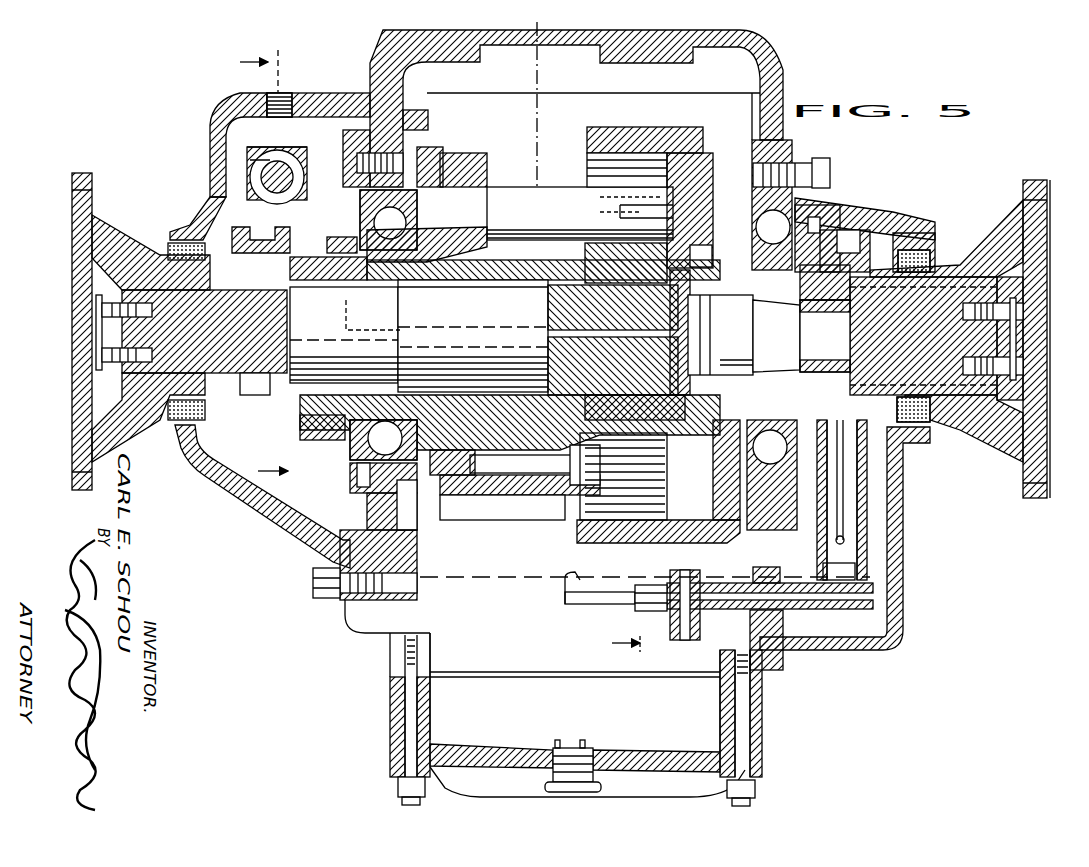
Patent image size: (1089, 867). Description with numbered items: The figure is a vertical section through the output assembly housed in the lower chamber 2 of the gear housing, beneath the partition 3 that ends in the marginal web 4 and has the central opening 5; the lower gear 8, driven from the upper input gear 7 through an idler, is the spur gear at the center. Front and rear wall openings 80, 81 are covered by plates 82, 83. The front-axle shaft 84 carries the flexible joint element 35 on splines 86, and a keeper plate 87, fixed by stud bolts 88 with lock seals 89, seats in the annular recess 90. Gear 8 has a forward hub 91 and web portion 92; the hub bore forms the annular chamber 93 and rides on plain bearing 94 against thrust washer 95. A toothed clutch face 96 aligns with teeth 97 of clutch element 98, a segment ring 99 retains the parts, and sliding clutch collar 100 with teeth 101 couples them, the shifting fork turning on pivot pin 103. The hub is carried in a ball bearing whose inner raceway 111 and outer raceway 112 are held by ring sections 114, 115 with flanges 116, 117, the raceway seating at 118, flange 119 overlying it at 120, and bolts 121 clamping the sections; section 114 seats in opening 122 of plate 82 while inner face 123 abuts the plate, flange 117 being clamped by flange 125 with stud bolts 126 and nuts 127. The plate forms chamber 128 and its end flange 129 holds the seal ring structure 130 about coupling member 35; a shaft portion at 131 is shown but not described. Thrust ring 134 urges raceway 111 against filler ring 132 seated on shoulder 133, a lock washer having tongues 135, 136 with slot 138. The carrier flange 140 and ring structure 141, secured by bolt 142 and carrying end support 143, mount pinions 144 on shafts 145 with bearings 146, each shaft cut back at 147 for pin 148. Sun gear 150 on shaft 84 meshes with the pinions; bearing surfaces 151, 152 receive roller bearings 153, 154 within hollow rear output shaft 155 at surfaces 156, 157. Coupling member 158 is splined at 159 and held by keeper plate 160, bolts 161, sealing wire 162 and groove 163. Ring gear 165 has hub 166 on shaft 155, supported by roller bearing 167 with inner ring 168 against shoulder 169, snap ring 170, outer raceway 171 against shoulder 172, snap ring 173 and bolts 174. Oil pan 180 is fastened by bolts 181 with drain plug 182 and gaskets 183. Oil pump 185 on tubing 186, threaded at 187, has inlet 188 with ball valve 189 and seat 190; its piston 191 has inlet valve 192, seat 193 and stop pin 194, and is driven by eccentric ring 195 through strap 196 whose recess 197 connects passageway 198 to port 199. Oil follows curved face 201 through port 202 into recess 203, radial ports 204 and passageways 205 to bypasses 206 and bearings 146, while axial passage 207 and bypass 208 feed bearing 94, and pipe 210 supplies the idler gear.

The lower chamber 2 is at (458, 625).
The partition 3 is at (531, 360).
The marginal web 4 is at (712, 85).
The central opening 5 is at (530, 60).
The upper input gear 7 is at (235, 270).
The lower gear 8 is at (510, 512).
The flexible joint element 35 is at (125, 250).
The opening 80 is at (412, 125).
The opening 81 is at (760, 177).
The plate 82 is at (212, 147).
The plate 83 is at (900, 612).
The shaft 84 is at (188, 358).
The meshing splines 86 is at (180, 296).
The plate 87 is at (105, 376).
The stud bolts 88 is at (105, 306).
The lock seals 89 is at (95, 329).
The annular recess 90 is at (120, 391).
The hub 91 is at (372, 275).
The intermediate web portion 92 is at (507, 435).
The annular chamber 93 is at (488, 282).
The plain bearing 94 is at (336, 366).
The thrust washer 95 is at (290, 252).
The toothed clutch face 96 is at (290, 240).
The teeth 97 is at (222, 432).
The clutch element 98 is at (236, 395).
The segment ring 99 is at (311, 300).
The sliding clutch collar 100 is at (288, 432).
The teeth 101 is at (265, 432).
The pivotal pin mounting 103 is at (272, 170).
The inner raceway 111 is at (346, 220).
The outer raceway 112 is at (416, 193).
The ring section 114 is at (360, 105).
The ring support section 115 is at (422, 152).
The inner marginal flange 116 is at (425, 202).
The outer marginal flange 117 is at (370, 128).
The seat 118 is at (360, 210).
The flange 119 is at (335, 482).
The overlying portion 120 is at (350, 500).
The bolts 121 is at (355, 190).
The opening 122 is at (350, 526).
The inner face 123 is at (384, 509).
The flange 125 is at (372, 80).
The stud bolts 126 is at (313, 583).
The nuts 127 is at (340, 562).
The chamber 128 is at (220, 214).
The end flange 129 is at (185, 447).
The bearing and seal ring structure 130 is at (175, 417).
The shaft portion 131 is at (300, 350).
The filler ring 132 is at (478, 263).
The annular shoulder 133 is at (500, 248).
The thrust ring 134 is at (385, 438).
The tongue 135 is at (380, 413).
The tongue 136 is at (328, 427).
The slot 138 is at (350, 465).
The flange 140 is at (556, 462).
The ring structure 141 is at (715, 426).
The bolt 142 is at (472, 463).
The pinion shaft end supporting structure 143 is at (688, 156).
The pinions 144 is at (650, 165).
The pinion shaft 145 is at (522, 220).
The bearing 146 is at (620, 203).
The cut back 147 is at (492, 232).
The pin 148 is at (490, 209).
The gear structure 150 is at (612, 417).
The bearing surface 151 is at (716, 348).
The bearing surface 152 is at (813, 331).
The roller bearing 153 is at (730, 382).
The roller bearing 154 is at (808, 366).
The rear output shaft 155 is at (893, 368).
The bearing surface 156 is at (800, 340).
The bearing surface 157 is at (765, 332).
The coupling member 158 is at (995, 436).
The splined connection 159 is at (948, 412).
The keeper plate 160 is at (1012, 396).
The bolts 161 is at (1015, 318).
The sealing wire 162 is at (1020, 343).
The groove 163 is at (1030, 284).
The ring gear 165 is at (640, 130).
The hub portion 166 is at (708, 463).
The roller bearing assembly 167 is at (782, 237).
The inner ring 168 is at (822, 213).
The hub shoulder 169 is at (770, 255).
The snap ring 170 is at (815, 247).
The outer raceway 171 is at (808, 187).
The shoulder 172 is at (815, 202).
The snap ring 173 is at (798, 205).
The bolts 174 is at (795, 165).
The plate 180 is at (655, 755).
The bolts 181 is at (400, 705).
The magnetic drain plug 182 is at (577, 755).
The gaskets 183 is at (438, 676).
The oil pump 185 is at (822, 563).
The hollow tubing 186 is at (745, 616).
The threaded connection 187 is at (800, 646).
The inlet 188 is at (670, 630).
The inlet ball valve 189 is at (668, 648).
The removable threaded seat 190 is at (665, 673).
The oil pump piston 191 is at (822, 508).
The inlet valve 192 is at (836, 545).
The adjustable valve seat 193 is at (839, 571).
The stop pin 194 is at (822, 527).
The eccentric ring 195 is at (900, 242).
The annular strap 196 is at (870, 222).
The annular recess 197 is at (850, 250).
The passageway 198 is at (838, 483).
The port 199 is at (860, 291).
The curved face 201 is at (750, 342).
The port 202 is at (650, 300).
The annular recess 203 is at (642, 263).
The radial ports 204 is at (700, 255).
The oil feed passageways 205 is at (616, 215).
The bypasses 206 is at (625, 203).
The axial passage 207 is at (600, 341).
The bypass 208 is at (350, 320).
The pipe 210 is at (580, 600).